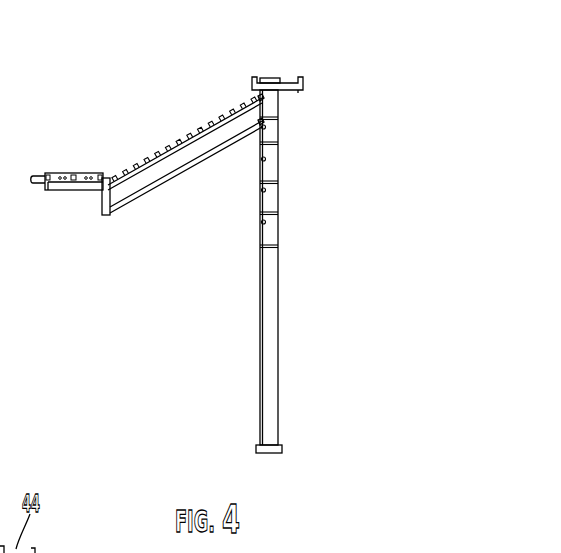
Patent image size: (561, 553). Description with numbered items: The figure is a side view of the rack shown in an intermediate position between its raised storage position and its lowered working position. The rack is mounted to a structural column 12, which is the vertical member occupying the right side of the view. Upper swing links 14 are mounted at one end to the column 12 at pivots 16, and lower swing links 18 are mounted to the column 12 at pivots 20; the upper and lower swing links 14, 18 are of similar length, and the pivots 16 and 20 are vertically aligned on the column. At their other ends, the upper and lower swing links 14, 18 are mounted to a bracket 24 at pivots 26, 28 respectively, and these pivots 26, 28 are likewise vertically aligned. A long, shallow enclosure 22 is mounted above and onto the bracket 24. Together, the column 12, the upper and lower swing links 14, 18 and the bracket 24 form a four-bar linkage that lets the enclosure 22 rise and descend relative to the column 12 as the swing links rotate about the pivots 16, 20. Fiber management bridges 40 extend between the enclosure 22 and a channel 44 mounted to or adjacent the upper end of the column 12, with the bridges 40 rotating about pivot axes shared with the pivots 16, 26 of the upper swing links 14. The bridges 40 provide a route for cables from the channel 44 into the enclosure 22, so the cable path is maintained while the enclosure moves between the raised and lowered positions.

The structural column 12 is at (265, 313).
The upper swing links 14 is at (216, 127).
The pivots 16 is at (264, 98).
The lower swing links 18 is at (190, 169).
The pivots 20 is at (265, 127).
The enclosure 22 is at (86, 172).
The bracket 24 is at (104, 187).
The pivots 26 is at (100, 190).
The pivots 28 is at (106, 216).
The fiber management bridges 40 is at (201, 124).
The channel 44 is at (286, 78).